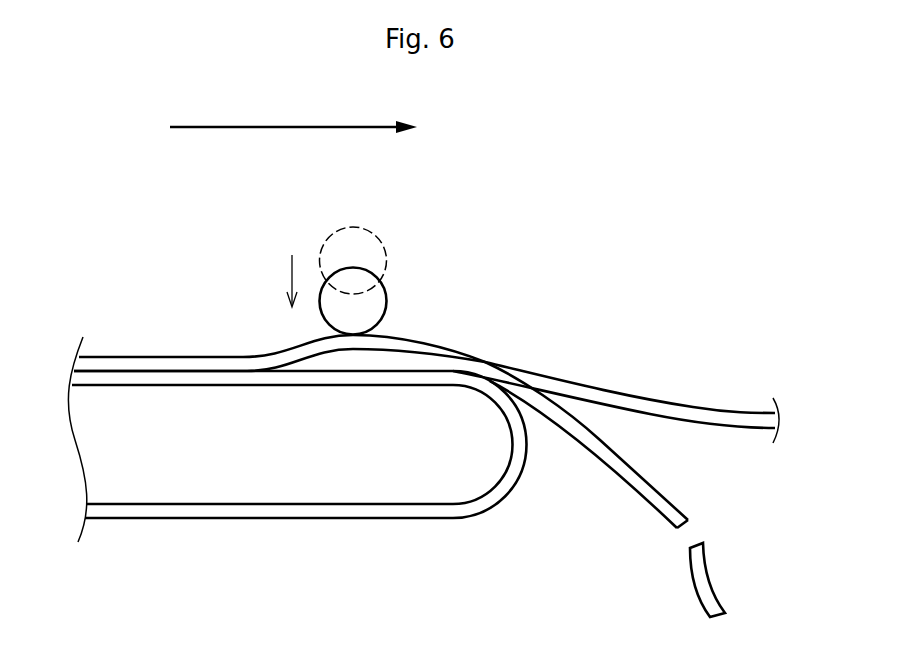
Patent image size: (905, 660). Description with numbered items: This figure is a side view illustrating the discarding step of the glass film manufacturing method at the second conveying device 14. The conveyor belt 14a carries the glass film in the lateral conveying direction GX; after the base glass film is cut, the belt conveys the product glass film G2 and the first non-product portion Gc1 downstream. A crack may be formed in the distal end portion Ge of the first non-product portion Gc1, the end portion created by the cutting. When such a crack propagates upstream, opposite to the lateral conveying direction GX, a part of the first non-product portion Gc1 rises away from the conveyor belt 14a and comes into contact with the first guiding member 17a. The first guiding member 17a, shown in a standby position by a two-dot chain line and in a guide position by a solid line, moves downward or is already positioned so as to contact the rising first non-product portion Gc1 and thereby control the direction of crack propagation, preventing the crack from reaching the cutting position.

The second conveying device 14 is at (128, 272).
The conveyor belt 14a is at (181, 378).
The first guiding member 17a is at (385, 247).
The lateral conveying direction GX is at (293, 116).
The product glass film G2 is at (717, 407).
The first non-product portion Gc1 is at (590, 422).
The distal end portion Ge is at (688, 524).